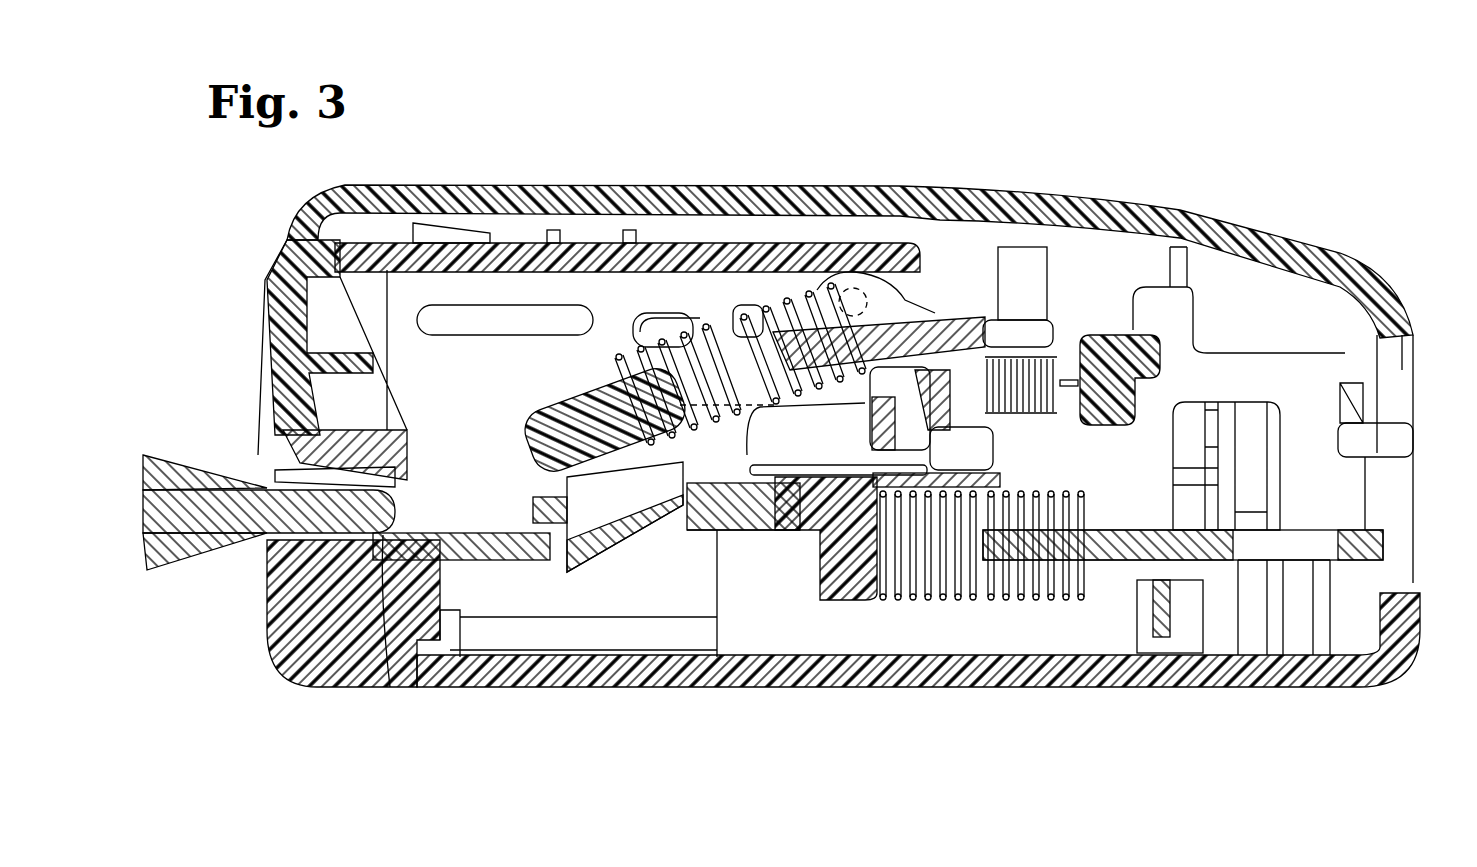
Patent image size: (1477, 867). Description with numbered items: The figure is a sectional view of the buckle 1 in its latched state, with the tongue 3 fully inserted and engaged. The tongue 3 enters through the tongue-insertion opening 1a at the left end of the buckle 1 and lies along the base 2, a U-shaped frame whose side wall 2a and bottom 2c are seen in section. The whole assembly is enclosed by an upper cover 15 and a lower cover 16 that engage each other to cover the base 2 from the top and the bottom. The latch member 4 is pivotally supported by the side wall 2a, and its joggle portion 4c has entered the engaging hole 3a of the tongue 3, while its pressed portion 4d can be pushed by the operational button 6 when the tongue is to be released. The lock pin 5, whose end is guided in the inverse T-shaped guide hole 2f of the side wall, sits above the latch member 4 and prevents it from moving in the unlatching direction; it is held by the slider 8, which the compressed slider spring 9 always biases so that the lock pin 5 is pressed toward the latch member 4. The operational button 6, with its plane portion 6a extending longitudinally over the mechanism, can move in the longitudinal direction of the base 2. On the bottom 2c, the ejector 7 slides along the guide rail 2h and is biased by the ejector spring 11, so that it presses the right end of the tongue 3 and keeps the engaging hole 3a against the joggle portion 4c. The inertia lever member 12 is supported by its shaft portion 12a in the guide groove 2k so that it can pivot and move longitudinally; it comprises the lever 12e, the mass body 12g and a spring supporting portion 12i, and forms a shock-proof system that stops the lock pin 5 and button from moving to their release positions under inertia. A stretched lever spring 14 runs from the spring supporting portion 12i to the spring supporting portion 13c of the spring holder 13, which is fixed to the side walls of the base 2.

The buckle 1 is at (493, 142).
The tongue-insertion opening 1a is at (270, 592).
The base 2 is at (1392, 484).
The side wall 2a is at (1296, 364).
The bottom 2c is at (1113, 555).
The inverse T-shaped guide hole 2f is at (645, 320).
The guide rail 2h is at (747, 548).
The guide groove 2k is at (750, 317).
The tongue 3 is at (212, 558).
The engaging hole 3a is at (388, 687).
The latch member 4 is at (958, 302).
The joggle portion 4c is at (600, 550).
The pressed portion 4d is at (1015, 258).
The lock pin 5 is at (530, 397).
The operational button 6 is at (285, 332).
The plane portion 6a is at (660, 255).
The ejector 7 is at (843, 580).
The slider 8 is at (577, 358).
The slider spring 9 is at (700, 322).
The ejector spring 11 is at (955, 598).
The inertia lever member 12 is at (852, 418).
The shaft portion 12a is at (858, 286).
The lever 12e is at (617, 352).
The mass body 12g is at (963, 400).
The spring supporting portion 12i is at (956, 477).
The spring holder 13 is at (1115, 340).
The spring supporting portion 13c is at (1158, 350).
The lever spring 14 is at (1040, 413).
The upper cover 15 is at (1123, 243).
The lower cover 16 is at (808, 688).